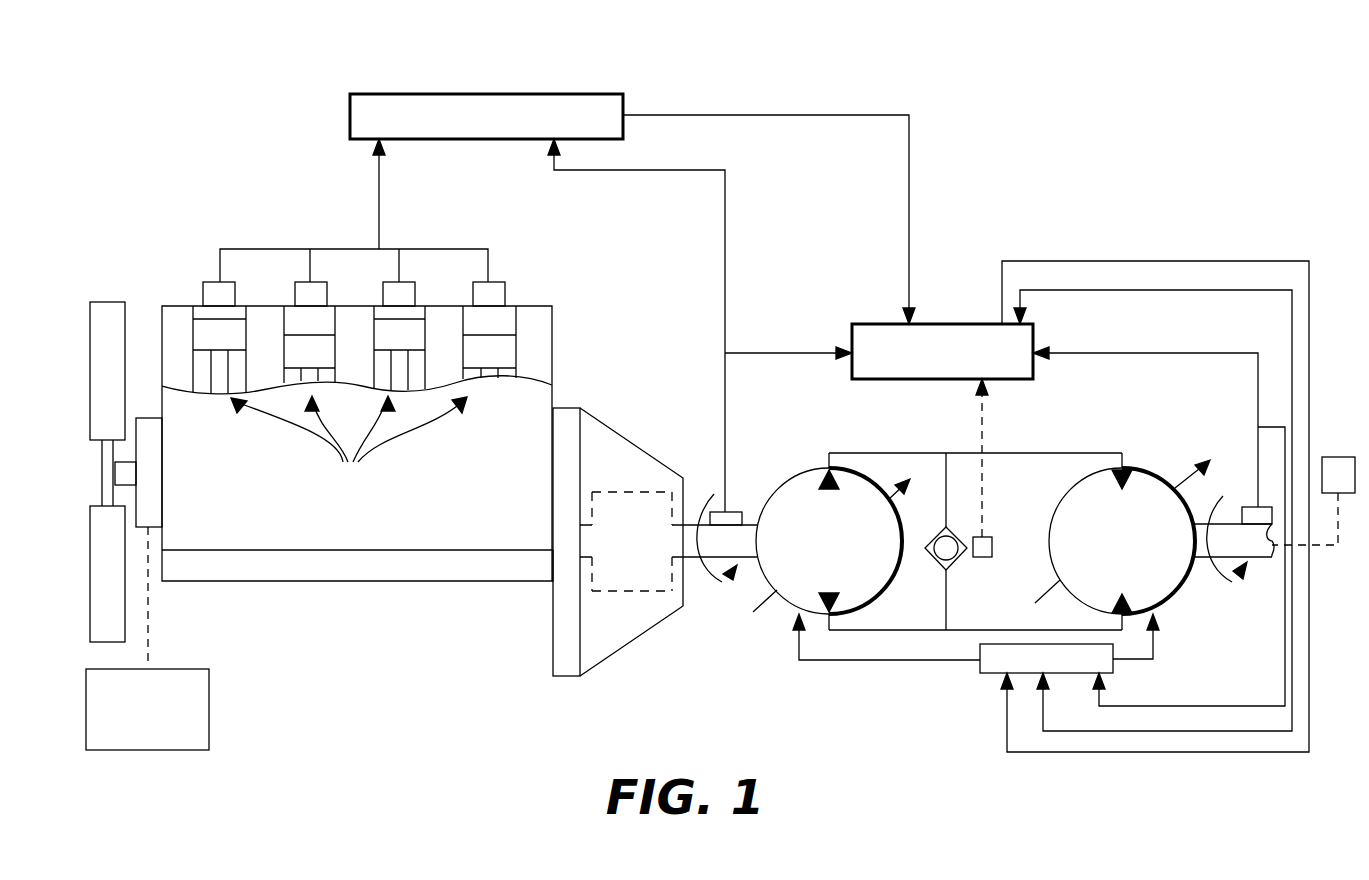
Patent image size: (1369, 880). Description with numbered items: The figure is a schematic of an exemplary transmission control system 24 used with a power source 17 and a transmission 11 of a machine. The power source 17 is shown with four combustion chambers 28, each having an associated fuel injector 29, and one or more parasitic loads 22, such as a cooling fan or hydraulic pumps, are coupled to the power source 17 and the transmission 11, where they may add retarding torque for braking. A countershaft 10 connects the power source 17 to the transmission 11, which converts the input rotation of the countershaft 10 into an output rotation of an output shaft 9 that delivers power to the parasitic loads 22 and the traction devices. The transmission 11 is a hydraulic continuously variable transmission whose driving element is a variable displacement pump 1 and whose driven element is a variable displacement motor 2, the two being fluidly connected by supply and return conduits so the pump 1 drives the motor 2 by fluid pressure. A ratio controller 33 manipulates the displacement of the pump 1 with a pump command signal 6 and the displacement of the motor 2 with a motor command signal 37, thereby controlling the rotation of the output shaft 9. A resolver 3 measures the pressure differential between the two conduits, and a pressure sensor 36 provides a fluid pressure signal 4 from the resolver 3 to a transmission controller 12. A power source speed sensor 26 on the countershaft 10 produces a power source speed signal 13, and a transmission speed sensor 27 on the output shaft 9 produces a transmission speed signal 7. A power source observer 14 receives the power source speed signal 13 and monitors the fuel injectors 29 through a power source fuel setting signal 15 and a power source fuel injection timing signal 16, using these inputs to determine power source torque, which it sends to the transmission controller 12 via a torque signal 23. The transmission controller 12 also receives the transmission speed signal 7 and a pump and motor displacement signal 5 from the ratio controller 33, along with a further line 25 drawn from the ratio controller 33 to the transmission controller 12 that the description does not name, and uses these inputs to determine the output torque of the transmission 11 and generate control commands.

The pump 1 is at (811, 557).
The motor 2 is at (1113, 557).
The resolver 3 is at (936, 562).
The fluid pressure signal 4 is at (975, 432).
The pump and motor displacement signal 5 is at (1195, 293).
The pump command signal 6 is at (850, 661).
The transmission speed signal 7 is at (1120, 353).
The output shaft 9 is at (1267, 558).
The countershaft 10 is at (707, 557).
The transmission 11 is at (910, 693).
The transmission controller 12 is at (926, 366).
The power source speed signal 13 is at (725, 300).
The power source observer 14 is at (447, 140).
The power source fuel setting signal 15 is at (319, 194).
The power source fuel injection timing signal 16 is at (379, 190).
The power source 17 is at (325, 606).
The parasitic loads 22 is at (101, 300).
The torque signal 23 is at (909, 165).
The transmission control system 24 is at (992, 128).
The sensor line 25 is at (1138, 261).
The power source speed sensor 26 is at (738, 511).
The transmission speed sensor 27 is at (1250, 507).
The combustion chambers 28 is at (349, 448).
The fuel injectors 29 is at (292, 296).
The ratio controller 33 is at (1031, 672).
The pressure sensor 36 is at (992, 538).
The motor command signal 37 is at (1153, 638).